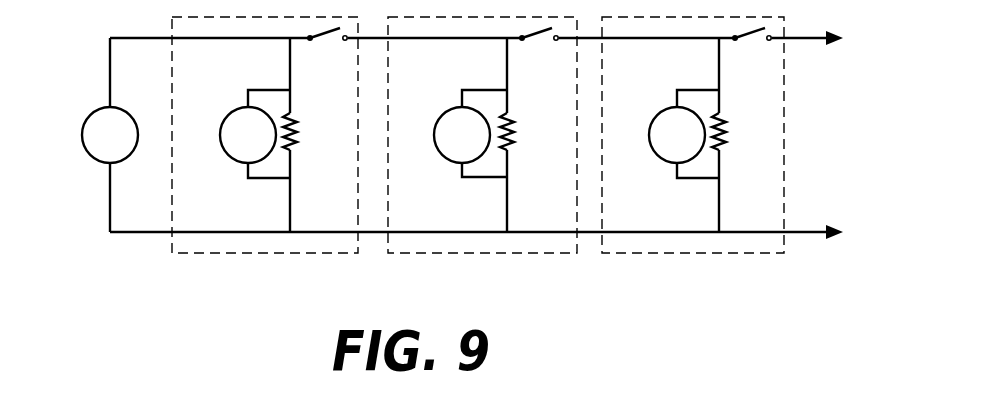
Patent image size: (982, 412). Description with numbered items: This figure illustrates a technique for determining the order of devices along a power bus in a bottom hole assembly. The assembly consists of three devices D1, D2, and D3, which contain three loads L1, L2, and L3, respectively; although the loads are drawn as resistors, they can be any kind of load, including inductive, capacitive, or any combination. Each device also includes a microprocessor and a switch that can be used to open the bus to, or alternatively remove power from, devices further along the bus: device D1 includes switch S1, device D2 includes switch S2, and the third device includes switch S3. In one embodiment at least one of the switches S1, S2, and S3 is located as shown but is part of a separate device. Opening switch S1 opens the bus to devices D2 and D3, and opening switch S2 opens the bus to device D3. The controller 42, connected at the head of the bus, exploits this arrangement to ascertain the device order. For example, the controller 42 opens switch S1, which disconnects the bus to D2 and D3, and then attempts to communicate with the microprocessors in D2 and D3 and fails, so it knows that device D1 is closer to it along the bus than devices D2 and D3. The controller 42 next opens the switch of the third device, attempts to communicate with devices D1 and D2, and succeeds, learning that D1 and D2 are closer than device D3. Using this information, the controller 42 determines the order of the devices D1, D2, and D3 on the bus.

The controller 42 is at (91, 114).
The switch S1 is at (327, 53).
The switch S2 is at (539, 53).
The switch S3 is at (751, 53).
The load L1 is at (307, 133).
The load L2 is at (525, 133).
The load L3 is at (733, 133).
The device D1 is at (265, 135).
The device D2 is at (482, 135).
The device D3 is at (693, 135).